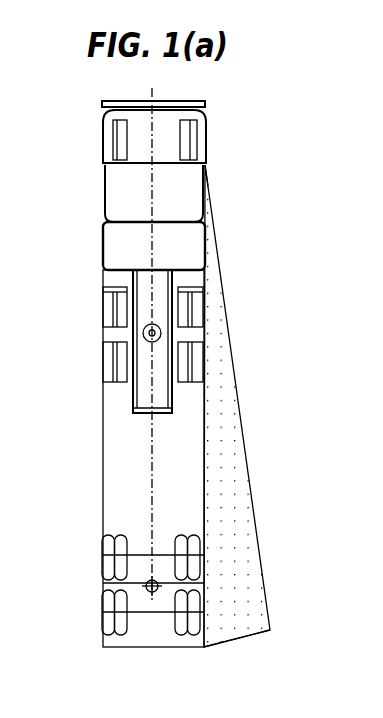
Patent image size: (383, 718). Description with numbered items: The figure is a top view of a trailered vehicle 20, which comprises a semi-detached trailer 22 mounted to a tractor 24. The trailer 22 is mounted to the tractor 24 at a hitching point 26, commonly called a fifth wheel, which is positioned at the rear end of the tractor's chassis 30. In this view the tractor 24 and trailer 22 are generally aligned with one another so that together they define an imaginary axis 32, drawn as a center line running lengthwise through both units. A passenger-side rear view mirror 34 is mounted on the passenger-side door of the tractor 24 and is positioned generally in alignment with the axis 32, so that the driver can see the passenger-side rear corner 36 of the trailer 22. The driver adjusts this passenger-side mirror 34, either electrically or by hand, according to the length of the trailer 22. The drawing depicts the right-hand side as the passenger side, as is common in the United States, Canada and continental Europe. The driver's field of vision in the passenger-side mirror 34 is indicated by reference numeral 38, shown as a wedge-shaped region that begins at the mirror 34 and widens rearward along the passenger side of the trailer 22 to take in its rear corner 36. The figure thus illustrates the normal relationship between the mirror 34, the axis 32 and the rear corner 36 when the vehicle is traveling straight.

The trailered vehicle 20 is at (62, 133).
The semi-detached trailer 22 is at (115, 470).
The tractor 24 is at (131, 210).
The hitching point 26 is at (143, 333).
The chassis 30 is at (145, 277).
The imaginary axis 32 is at (155, 592).
The passenger-side rear view mirror 34 is at (206, 176).
The passenger-side rear corner 36 is at (202, 647).
The driver's field of vision 38 is at (230, 488).